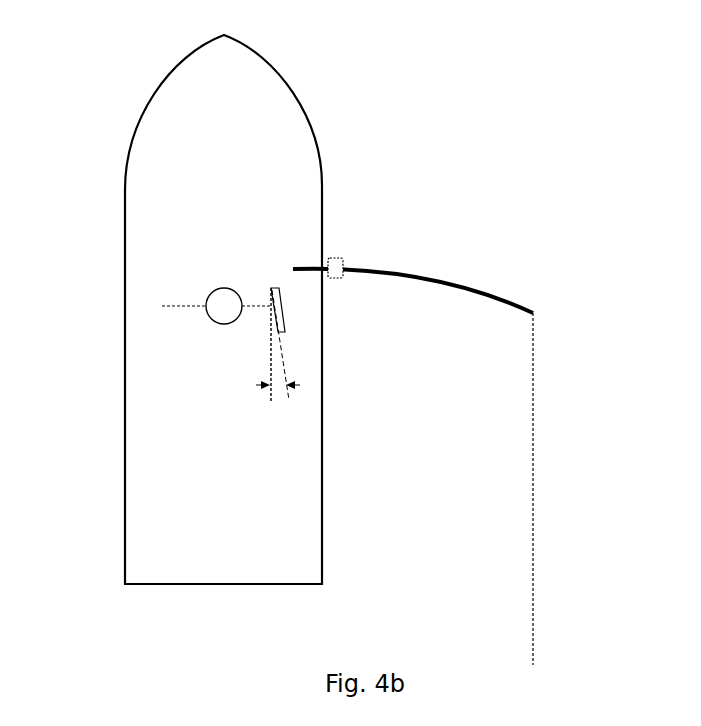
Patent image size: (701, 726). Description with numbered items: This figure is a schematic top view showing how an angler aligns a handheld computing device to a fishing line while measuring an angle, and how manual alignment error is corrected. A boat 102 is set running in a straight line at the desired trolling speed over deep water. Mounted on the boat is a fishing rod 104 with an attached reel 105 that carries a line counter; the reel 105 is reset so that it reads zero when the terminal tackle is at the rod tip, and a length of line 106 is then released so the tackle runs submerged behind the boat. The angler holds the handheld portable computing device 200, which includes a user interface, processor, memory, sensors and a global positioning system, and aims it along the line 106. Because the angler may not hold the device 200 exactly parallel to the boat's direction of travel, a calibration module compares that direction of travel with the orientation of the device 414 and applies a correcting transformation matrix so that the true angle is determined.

The boat 102 is at (138, 113).
The fishing rod 104 is at (442, 278).
The reel 105 is at (335, 253).
The line 106 is at (540, 358).
The handheld portable computing device 200 is at (280, 312).
The orientation of the device 414 is at (287, 390).